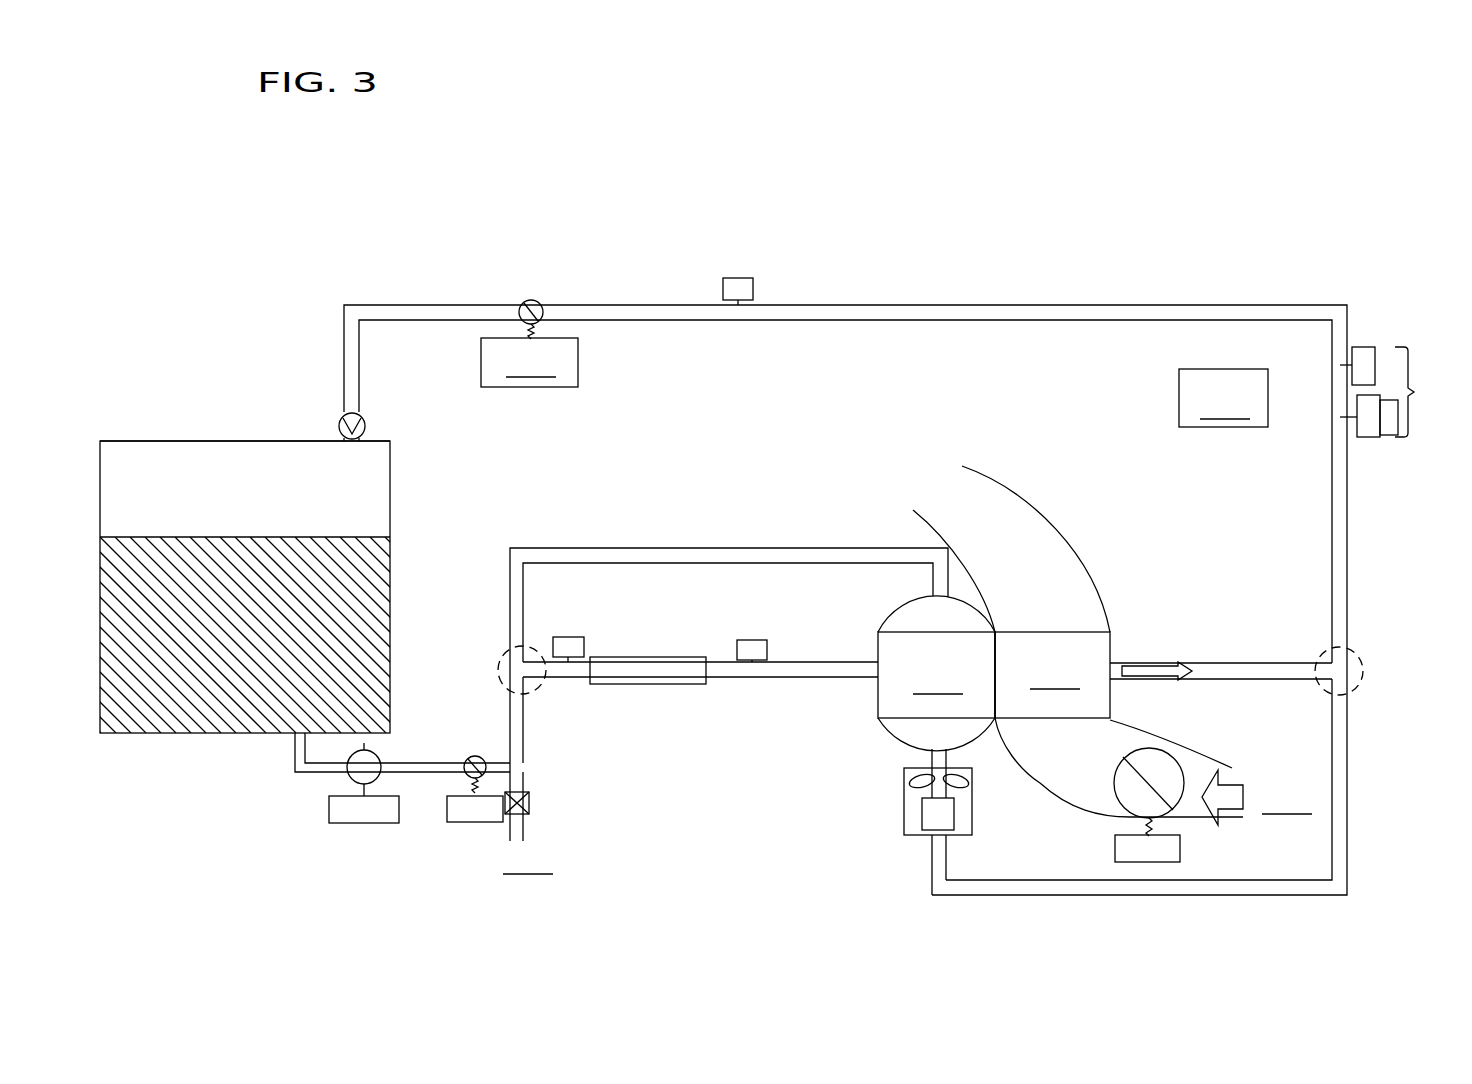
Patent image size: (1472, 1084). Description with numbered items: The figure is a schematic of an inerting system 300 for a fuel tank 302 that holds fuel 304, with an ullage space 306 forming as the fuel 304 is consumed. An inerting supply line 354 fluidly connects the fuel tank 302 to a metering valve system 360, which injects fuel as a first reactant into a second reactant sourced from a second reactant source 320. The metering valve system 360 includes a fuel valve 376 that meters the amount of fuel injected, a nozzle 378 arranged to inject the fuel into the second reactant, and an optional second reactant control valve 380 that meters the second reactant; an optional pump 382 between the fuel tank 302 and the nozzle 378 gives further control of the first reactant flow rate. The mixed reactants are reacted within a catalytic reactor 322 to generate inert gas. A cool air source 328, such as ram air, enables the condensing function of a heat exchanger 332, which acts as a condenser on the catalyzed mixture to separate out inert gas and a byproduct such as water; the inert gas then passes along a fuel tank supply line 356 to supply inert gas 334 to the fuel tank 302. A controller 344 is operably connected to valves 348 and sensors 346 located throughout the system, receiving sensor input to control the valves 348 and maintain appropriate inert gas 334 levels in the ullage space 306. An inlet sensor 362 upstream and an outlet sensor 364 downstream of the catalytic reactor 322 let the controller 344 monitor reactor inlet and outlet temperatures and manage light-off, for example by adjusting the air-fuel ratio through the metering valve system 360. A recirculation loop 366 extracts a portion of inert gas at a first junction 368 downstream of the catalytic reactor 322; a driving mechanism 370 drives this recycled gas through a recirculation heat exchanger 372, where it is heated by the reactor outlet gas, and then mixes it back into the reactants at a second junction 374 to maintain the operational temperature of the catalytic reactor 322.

The inerting system 300 is at (1202, 172).
The fuel tank 302 is at (393, 496).
The fuel 304 is at (223, 698).
The ullage space 306 is at (168, 474).
The second reactant source 320 is at (529, 856).
The catalytic reactor 322 is at (632, 685).
The cool air source 328 is at (1258, 797).
The heat exchanger 332 is at (1052, 675).
The inert gas 334 is at (1157, 668).
The controller 344 is at (1223, 398).
The sensors 346 is at (753, 288).
The valves 348 is at (1150, 778).
The inerting supply line 354 is at (410, 763).
The fuel tank supply line 356 is at (945, 305).
The metering valve system 360 is at (560, 790).
The inlet sensor 362 is at (570, 655).
The outlet sensor 364 is at (752, 658).
The recirculation loop 366 is at (707, 548).
The first junction 368 is at (1350, 690).
The driving mechanism 370 is at (905, 806).
The recirculation heat exchanger 372 is at (936, 682).
The second junction 374 is at (497, 666).
The fuel valve 376 is at (480, 823).
The nozzle 378 is at (525, 769).
The second reactant control valve 380 is at (528, 810).
The pump 382 is at (365, 823).